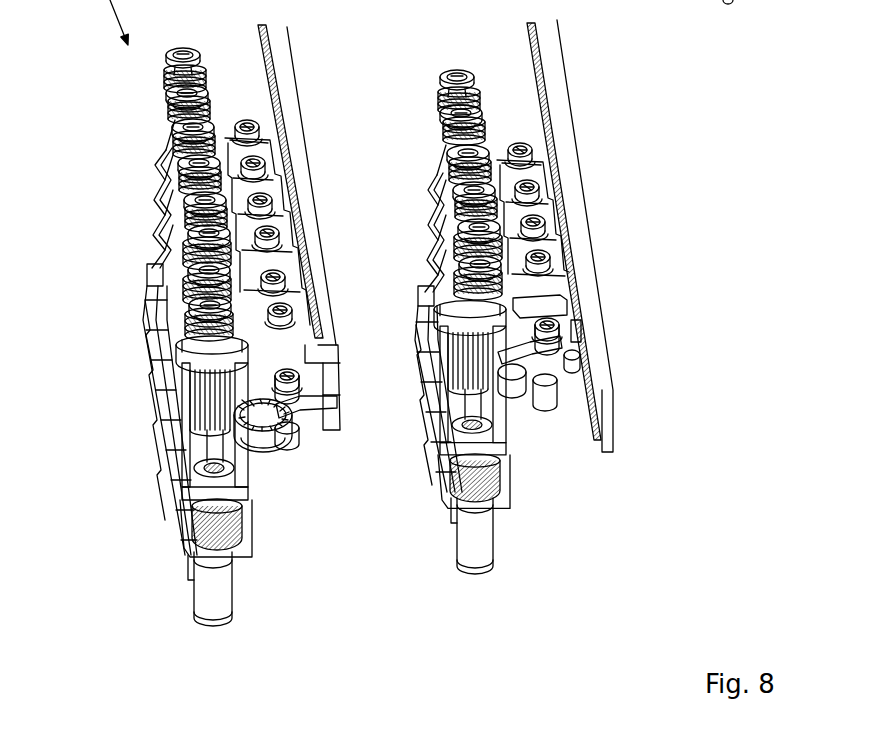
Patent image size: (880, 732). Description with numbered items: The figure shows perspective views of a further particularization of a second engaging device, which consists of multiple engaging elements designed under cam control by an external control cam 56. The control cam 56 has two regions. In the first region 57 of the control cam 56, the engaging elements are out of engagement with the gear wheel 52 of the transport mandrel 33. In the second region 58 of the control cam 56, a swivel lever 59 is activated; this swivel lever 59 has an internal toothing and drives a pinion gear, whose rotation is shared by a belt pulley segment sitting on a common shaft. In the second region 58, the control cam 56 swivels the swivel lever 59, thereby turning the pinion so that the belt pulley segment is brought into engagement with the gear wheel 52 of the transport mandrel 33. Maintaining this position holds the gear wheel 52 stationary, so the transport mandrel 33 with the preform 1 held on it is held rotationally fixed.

The preform 1 is at (223, 603).
The transport mandrel 33 is at (162, 165).
The gear wheel 52 is at (205, 413).
The control cam 56 is at (282, 33).
The first region 57 is at (308, 82).
The second region 58 is at (350, 333).
The swivel lever 59 is at (283, 410).